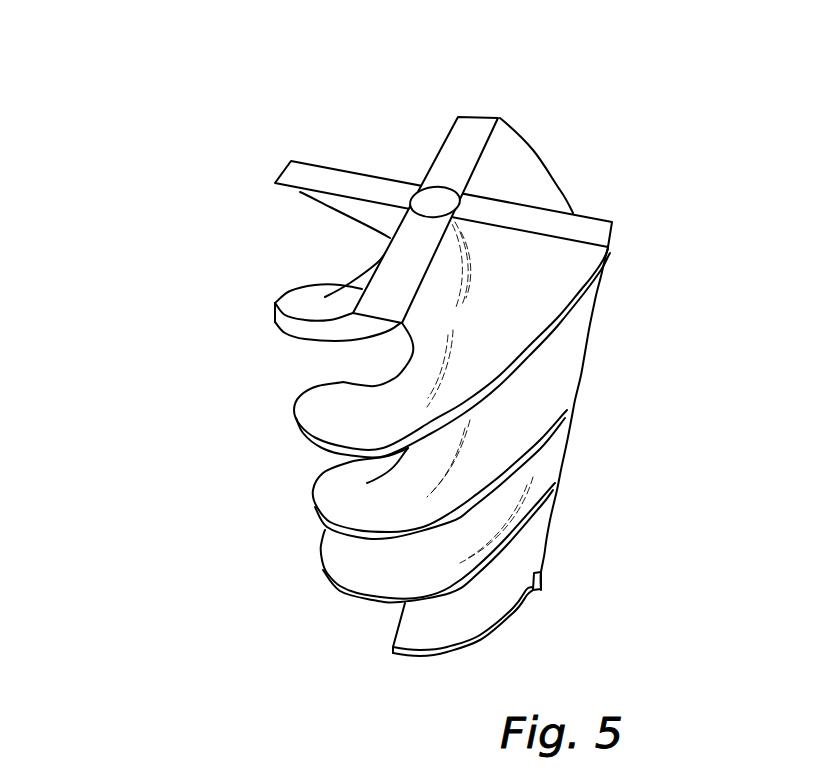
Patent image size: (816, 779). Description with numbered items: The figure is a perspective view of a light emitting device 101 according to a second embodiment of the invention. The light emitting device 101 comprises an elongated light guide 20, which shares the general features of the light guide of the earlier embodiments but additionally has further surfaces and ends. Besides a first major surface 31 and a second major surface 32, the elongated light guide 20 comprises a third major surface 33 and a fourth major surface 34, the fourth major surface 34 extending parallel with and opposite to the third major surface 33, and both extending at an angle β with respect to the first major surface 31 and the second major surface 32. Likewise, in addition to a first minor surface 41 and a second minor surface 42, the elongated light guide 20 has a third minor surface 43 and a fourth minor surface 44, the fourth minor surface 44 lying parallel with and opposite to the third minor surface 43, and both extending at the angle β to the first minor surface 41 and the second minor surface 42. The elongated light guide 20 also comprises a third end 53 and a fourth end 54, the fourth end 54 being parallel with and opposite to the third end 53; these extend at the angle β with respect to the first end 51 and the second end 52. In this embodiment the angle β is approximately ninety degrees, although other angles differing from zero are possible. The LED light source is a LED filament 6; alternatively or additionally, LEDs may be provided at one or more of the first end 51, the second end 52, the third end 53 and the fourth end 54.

The elongated light guide 20 is at (449, 349).
The light emitting device 101 is at (174, 309).
The LED filament 6 is at (435, 185).
The third end 53 is at (470, 142).
The first end 51 is at (552, 218).
The first major surface 31 is at (505, 302).
The second major surface 32 is at (311, 440).
The third major surface 33 is at (292, 300).
The fourth major surface 34 is at (388, 215).
The first minor surface 41 is at (567, 327).
The second minor surface 42 is at (374, 379).
The third minor surface 43 is at (280, 320).
The fourth minor surface 44 is at (390, 238).
The second end 52 is at (535, 595).
The fourth end 54 is at (395, 625).